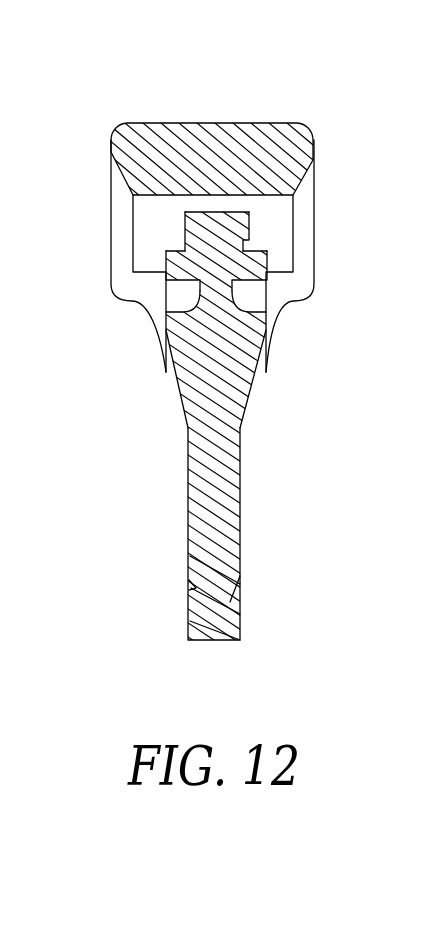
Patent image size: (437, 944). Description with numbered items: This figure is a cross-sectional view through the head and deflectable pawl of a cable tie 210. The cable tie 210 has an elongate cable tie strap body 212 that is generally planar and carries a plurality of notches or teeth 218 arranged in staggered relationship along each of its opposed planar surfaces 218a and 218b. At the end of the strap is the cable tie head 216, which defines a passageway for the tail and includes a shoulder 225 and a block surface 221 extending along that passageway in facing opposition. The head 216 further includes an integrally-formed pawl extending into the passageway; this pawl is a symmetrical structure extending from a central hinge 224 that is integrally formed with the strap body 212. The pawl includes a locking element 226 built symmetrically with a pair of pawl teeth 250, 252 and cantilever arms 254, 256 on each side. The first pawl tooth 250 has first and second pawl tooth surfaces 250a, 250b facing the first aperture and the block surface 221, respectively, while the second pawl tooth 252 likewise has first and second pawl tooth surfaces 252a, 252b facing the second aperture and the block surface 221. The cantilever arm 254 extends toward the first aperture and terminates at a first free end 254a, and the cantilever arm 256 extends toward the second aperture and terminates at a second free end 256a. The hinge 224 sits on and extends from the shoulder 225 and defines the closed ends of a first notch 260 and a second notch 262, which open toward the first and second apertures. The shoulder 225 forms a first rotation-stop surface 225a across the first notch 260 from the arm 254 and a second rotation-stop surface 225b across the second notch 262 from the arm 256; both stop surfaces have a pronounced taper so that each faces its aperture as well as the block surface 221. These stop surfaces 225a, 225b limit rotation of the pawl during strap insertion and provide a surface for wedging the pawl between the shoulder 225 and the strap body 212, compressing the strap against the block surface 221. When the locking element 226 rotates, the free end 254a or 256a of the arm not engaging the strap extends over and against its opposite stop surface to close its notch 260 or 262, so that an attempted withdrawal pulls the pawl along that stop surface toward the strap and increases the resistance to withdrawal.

The cable tie 210 is at (230, 40).
The cable tie strap body 212 is at (241, 525).
The cable tie head 216 is at (317, 173).
The notches or teeth 218 is at (189, 588).
The opposed planar surface 218a is at (241, 579).
The opposed planar surface 218b is at (189, 573).
The block surface 221 is at (152, 200).
The central hinge 224 is at (266, 340).
The shoulder 225 is at (212, 355).
The first rotation-stop surface 225a is at (183, 301).
The second rotation-stop surface 225b is at (264, 357).
The locking element 226 is at (181, 234).
The first pawl tooth 250 is at (129, 156).
The first pawl tooth surface 250a is at (181, 222).
The second pawl tooth surface 250b is at (198, 211).
The second pawl tooth 252 is at (257, 209).
The first pawl tooth surface 252a is at (256, 220).
The second pawl tooth surface 252b is at (250, 197).
The cantilever arm 254 is at (166, 251).
The first free end 254a is at (166, 270).
The cantilever arm 256 is at (264, 258).
The second free end 256a is at (274, 324).
The first notch 260 is at (157, 340).
The second notch 262 is at (222, 313).